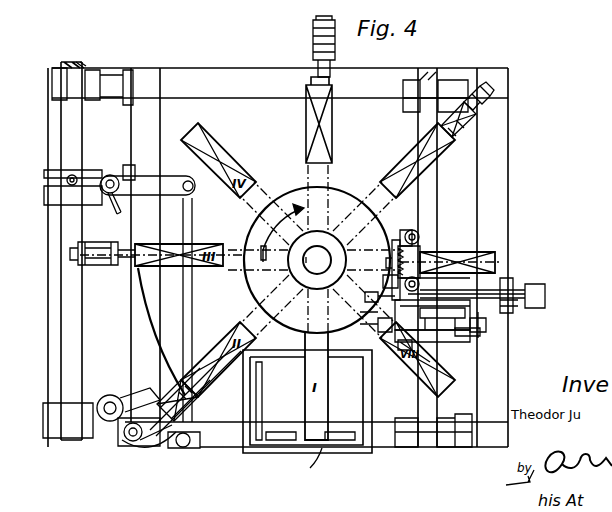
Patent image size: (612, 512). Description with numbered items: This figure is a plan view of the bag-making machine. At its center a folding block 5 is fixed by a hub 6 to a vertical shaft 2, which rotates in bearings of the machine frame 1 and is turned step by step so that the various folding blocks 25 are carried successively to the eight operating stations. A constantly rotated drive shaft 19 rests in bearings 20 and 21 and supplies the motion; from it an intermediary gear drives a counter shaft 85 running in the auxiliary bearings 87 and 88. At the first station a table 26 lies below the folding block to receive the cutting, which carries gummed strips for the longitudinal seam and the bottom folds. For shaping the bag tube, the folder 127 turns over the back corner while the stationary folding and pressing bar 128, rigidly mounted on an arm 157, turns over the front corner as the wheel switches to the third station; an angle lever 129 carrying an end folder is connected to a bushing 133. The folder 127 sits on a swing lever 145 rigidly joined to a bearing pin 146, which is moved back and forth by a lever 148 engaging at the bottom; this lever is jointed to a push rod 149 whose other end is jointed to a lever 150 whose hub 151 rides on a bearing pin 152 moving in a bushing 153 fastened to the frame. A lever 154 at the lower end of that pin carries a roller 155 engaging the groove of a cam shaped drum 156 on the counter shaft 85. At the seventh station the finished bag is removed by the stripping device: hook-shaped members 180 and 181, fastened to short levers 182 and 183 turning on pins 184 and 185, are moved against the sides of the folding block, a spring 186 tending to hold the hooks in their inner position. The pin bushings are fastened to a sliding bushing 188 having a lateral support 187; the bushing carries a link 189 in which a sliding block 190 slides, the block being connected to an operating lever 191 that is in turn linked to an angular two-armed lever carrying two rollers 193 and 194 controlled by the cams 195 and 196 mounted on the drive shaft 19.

The machine frame 1 is at (160, 125).
The vertical shaft 2 is at (310, 268).
The folding block 5 is at (292, 195).
The hub 6 is at (322, 236).
The drive shaft 19 is at (432, 184).
The bearing 20 is at (455, 80).
The bearing 21 is at (452, 444).
The folding blocks 25 is at (330, 176).
The table 26 is at (372, 393).
The counter shaft 85 is at (82, 331).
The auxiliary bearing 87 is at (98, 438).
The auxiliary bearing 88 is at (114, 78).
The folder 127 is at (210, 393).
The folding and pressing bar 128 is at (178, 337).
The angle lever 129 is at (208, 405).
The bushing 133 is at (98, 404).
The swing lever 145 is at (143, 445).
The bearing pin 146 is at (132, 446).
The lever 148 is at (178, 448).
The push rod 149 is at (192, 296).
The lever 150 is at (140, 178).
The hub 151 is at (100, 175).
The bearing pin 152 is at (104, 195).
The bushing 153 is at (129, 165).
The lever 154 is at (72, 170).
The roller 155 is at (52, 188).
The cam shaped drum 156 is at (60, 200).
The arm 157 is at (150, 382).
The hook-shaped member 180 is at (394, 244).
The hook-shaped member 181 is at (392, 281).
The short lever 182 is at (406, 232).
The short lever 183 is at (380, 308).
The pin 184 is at (420, 236).
The pin 185 is at (420, 283).
The spring 186 is at (398, 262).
The lateral support 187 is at (425, 250).
The sliding bushing 188 is at (472, 290).
The link 189 is at (440, 311).
The sliding block 190 is at (380, 326).
The operating lever 191 is at (438, 346).
The roller 193 is at (495, 322).
The roller 194 is at (396, 350).
The cam 195 is at (476, 320).
The cam 196 is at (476, 338).